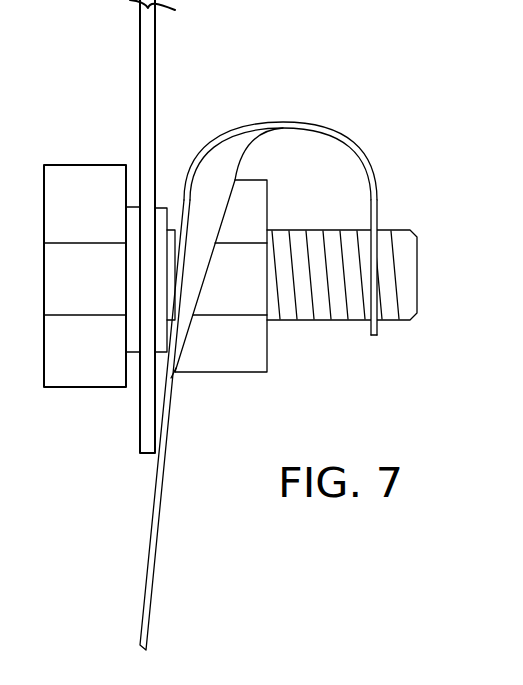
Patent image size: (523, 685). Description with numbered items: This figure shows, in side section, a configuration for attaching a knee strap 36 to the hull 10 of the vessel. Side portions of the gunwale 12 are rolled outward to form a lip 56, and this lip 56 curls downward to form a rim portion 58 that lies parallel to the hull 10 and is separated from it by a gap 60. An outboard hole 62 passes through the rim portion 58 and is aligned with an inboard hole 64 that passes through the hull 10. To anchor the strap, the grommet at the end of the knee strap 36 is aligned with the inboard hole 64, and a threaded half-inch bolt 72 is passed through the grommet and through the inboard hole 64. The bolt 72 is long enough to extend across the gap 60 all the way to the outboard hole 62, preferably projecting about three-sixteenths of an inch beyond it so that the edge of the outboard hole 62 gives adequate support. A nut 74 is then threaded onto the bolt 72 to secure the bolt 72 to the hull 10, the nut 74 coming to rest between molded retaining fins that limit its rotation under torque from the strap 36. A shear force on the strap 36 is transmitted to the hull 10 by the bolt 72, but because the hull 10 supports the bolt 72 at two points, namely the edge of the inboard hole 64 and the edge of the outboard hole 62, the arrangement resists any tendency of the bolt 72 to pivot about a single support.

The hull 10 is at (162, 507).
The gunwale 12 is at (320, 259).
The knee strap 36 is at (142, 112).
The lip 56 is at (270, 122).
The rim portion 58 is at (379, 331).
The gap 60 is at (287, 338).
The outboard hole 62 is at (388, 224).
The inboard hole 64 is at (176, 386).
The bolt 72 is at (77, 388).
The nut 74 is at (239, 373).